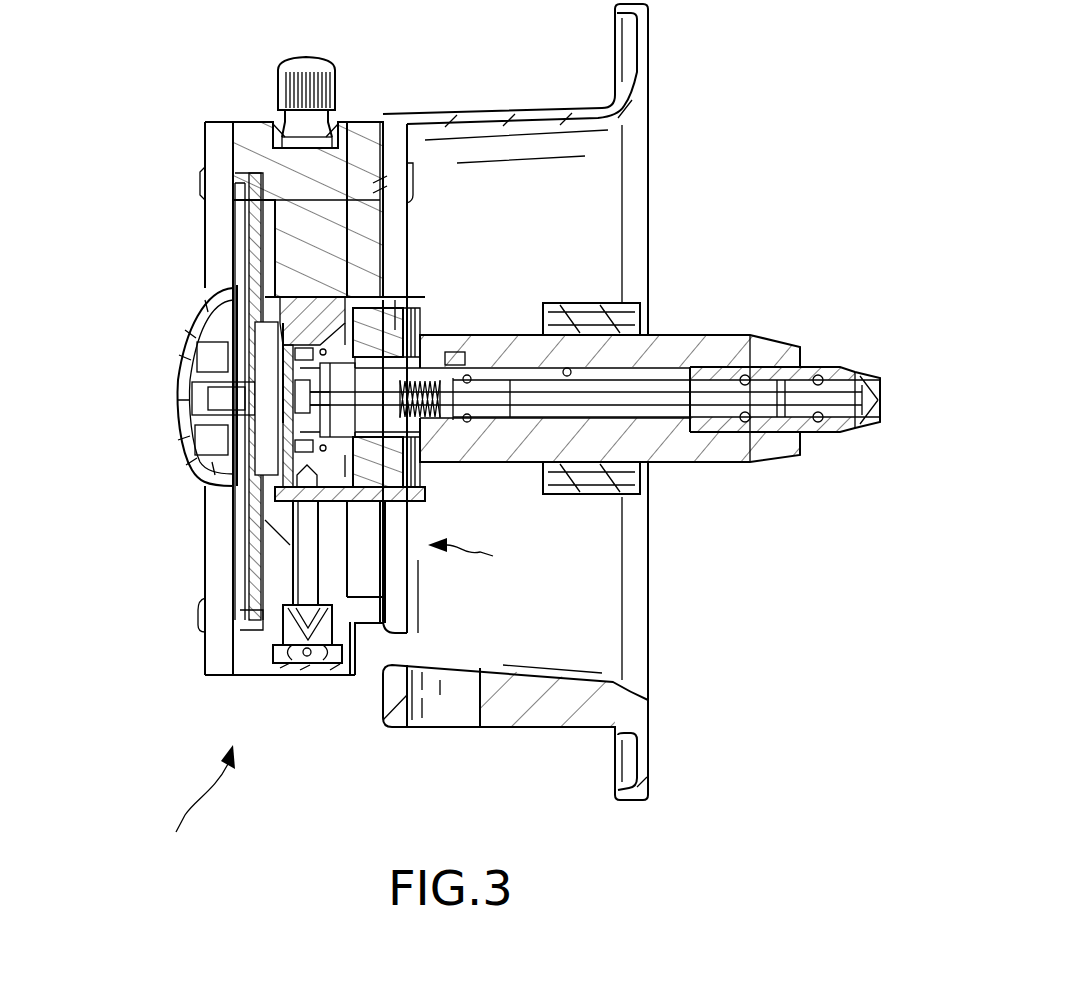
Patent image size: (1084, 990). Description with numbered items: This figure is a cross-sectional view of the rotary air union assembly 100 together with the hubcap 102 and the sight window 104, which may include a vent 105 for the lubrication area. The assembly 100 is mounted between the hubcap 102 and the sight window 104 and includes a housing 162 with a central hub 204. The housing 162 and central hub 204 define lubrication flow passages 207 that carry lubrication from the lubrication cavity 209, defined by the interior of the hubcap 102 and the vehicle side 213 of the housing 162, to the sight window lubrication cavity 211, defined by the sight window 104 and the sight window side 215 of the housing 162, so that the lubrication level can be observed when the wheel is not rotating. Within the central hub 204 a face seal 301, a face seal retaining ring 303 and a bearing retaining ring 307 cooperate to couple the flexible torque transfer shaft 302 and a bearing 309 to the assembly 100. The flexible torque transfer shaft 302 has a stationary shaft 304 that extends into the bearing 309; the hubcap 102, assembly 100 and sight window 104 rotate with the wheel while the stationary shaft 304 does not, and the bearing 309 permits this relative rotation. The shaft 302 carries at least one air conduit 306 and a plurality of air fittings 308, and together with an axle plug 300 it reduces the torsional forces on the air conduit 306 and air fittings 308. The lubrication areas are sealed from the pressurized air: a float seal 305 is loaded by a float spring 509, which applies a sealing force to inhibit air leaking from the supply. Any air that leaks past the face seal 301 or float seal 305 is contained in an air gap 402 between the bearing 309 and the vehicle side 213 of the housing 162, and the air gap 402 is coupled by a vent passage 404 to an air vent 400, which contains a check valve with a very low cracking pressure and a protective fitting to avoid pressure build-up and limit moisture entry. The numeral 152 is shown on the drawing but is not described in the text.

The rotary air union assembly 100 is at (191, 797).
The hubcap 102 is at (593, 705).
The sight window 104 is at (225, 250).
The vent 105 is at (186, 350).
The adjustment screw 152 is at (280, 88).
The housing 162 is at (272, 165).
The central hub 204 is at (290, 320).
The lubrication flow passage 207 is at (479, 554).
The lubrication cavity 209 is at (600, 611).
The sight window lubrication cavity 211 is at (255, 587).
The vehicle side of the housing 213 is at (385, 195).
The sight window side of the housing 215 is at (220, 677).
The axle plug 300 is at (640, 487).
The face seal 301 is at (295, 372).
The flexible torque transfer shaft 302 is at (750, 452).
The face seal retaining ring 303 is at (337, 345).
The stationary shaft 304 is at (440, 345).
The float seal 305 is at (350, 402).
The air conduit 306 is at (720, 367).
The bearing retaining ring 307 is at (400, 308).
The air fitting 308 is at (567, 372).
The bearing 309 is at (387, 300).
The air vent 400 is at (296, 645).
The air gap 402 is at (338, 472).
The vent passage 404 is at (308, 572).
The float spring 509 is at (470, 378).